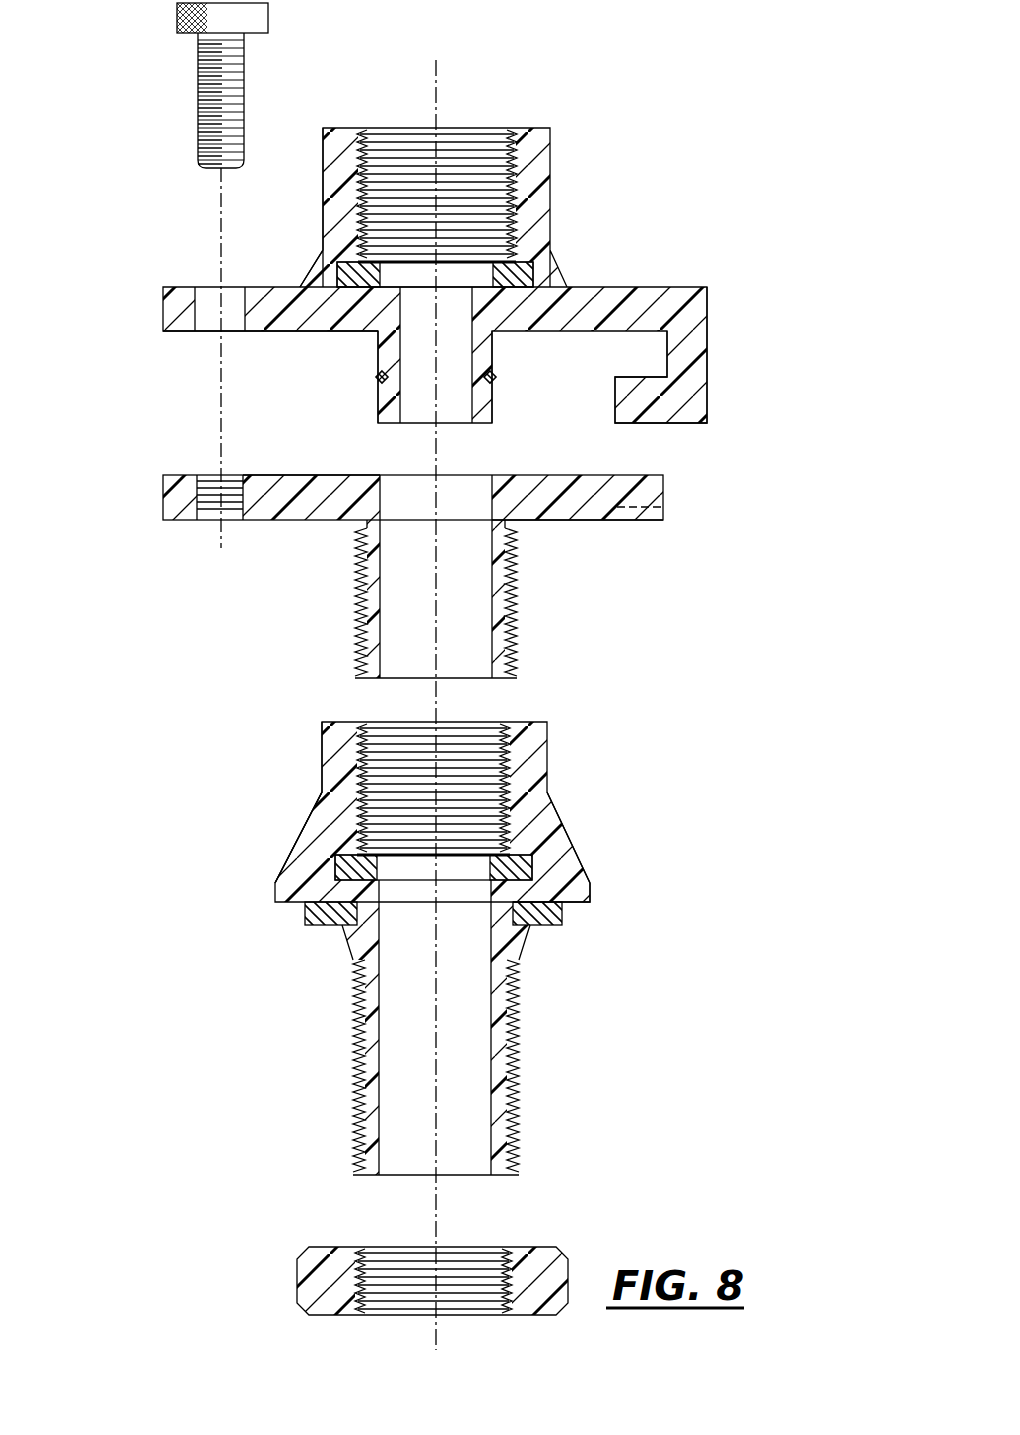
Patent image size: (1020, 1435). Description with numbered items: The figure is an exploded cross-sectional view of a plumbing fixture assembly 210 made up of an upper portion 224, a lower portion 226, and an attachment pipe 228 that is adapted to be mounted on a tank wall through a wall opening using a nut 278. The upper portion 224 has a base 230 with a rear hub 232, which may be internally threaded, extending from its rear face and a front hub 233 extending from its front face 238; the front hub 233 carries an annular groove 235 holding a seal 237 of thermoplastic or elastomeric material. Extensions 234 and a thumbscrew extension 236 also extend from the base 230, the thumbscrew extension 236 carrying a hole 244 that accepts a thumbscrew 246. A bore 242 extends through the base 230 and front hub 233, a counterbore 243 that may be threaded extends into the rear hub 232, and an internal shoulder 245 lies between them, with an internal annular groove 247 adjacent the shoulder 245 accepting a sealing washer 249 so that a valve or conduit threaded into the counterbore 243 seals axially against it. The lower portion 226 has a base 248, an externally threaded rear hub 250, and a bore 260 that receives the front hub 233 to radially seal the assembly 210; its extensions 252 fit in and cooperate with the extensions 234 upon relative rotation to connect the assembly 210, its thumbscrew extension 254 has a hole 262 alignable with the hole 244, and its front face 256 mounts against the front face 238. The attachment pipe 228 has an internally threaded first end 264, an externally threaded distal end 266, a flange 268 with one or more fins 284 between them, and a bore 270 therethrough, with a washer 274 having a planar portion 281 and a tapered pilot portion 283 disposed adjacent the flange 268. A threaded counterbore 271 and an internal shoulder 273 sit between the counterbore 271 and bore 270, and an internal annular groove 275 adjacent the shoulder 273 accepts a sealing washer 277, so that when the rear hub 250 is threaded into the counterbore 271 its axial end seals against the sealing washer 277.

The assembly 210 is at (662, 730).
The upper portion 224 is at (565, 176).
The lower portion 226 is at (345, 632).
The attachment pipe 228 is at (575, 777).
The base 230 is at (597, 287).
The rear hub 232 is at (340, 160).
The front hub 233 is at (492, 408).
The extensions 234 is at (708, 357).
The annular groove 235 is at (495, 378).
The thumbscrew extension 236 is at (170, 287).
The seal 237 is at (378, 380).
The front face 238 is at (330, 332).
The bore 242 is at (434, 422).
The counterbore 243 is at (392, 138).
The hole 244 is at (192, 287).
The internal shoulder 245 is at (404, 278).
The thumbscrew 246 is at (177, 8).
The internal annular groove 247 is at (387, 268).
The base 248 is at (560, 510).
The sealing washer 249 is at (500, 272).
The rear hub 250 is at (355, 597).
The extensions 252 is at (655, 475).
The thumbscrew extension 254 is at (168, 490).
The front face 256 is at (265, 475).
The bore 260 is at (452, 668).
The hole 262 is at (213, 520).
The first end 264 is at (322, 780).
The distal end 266 is at (360, 1112).
The flange 268 is at (592, 893).
The bore 270 is at (472, 1155).
The counterbore 271 is at (466, 748).
The internal shoulder 273 is at (380, 872).
The washer 274 is at (560, 938).
The internal annular groove 275 is at (383, 855).
The sealing washer 277 is at (492, 874).
The nut 278 is at (548, 1258).
The planar portion 281 is at (312, 925).
The tapered pilot portion 283 is at (520, 952).
The fins 284 is at (300, 862).